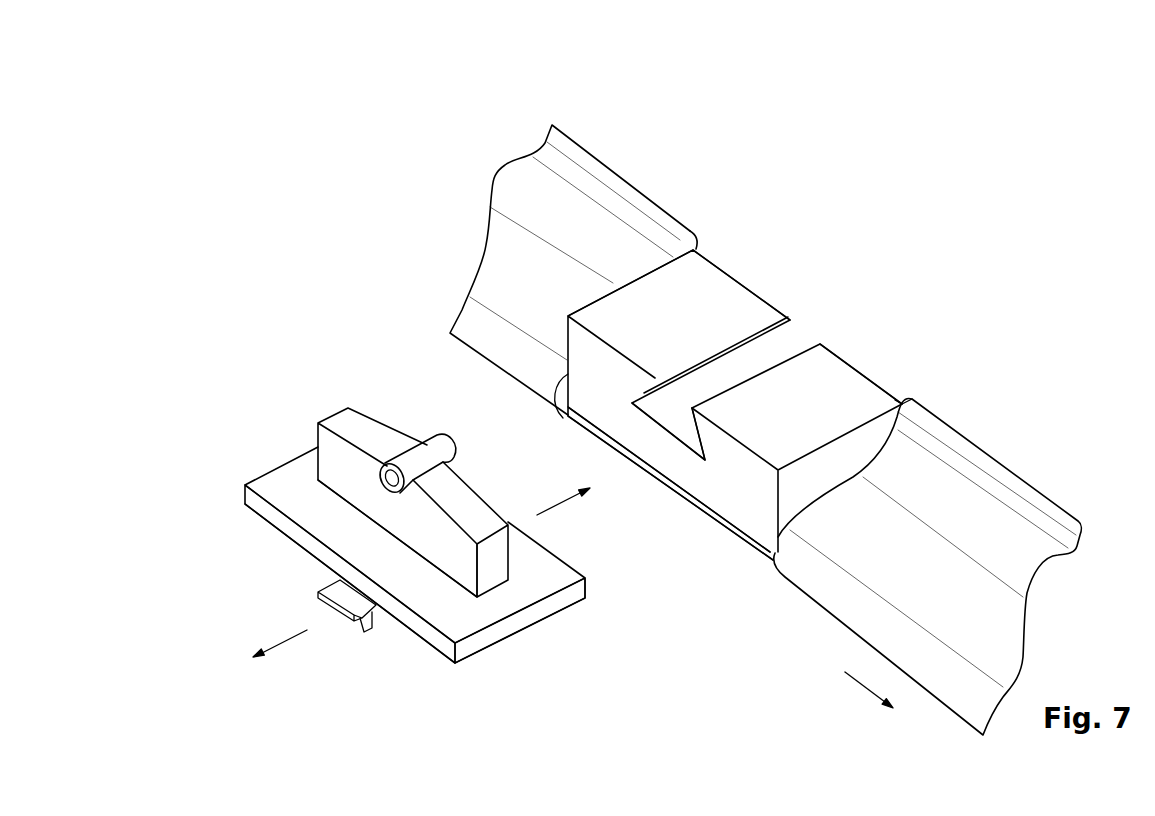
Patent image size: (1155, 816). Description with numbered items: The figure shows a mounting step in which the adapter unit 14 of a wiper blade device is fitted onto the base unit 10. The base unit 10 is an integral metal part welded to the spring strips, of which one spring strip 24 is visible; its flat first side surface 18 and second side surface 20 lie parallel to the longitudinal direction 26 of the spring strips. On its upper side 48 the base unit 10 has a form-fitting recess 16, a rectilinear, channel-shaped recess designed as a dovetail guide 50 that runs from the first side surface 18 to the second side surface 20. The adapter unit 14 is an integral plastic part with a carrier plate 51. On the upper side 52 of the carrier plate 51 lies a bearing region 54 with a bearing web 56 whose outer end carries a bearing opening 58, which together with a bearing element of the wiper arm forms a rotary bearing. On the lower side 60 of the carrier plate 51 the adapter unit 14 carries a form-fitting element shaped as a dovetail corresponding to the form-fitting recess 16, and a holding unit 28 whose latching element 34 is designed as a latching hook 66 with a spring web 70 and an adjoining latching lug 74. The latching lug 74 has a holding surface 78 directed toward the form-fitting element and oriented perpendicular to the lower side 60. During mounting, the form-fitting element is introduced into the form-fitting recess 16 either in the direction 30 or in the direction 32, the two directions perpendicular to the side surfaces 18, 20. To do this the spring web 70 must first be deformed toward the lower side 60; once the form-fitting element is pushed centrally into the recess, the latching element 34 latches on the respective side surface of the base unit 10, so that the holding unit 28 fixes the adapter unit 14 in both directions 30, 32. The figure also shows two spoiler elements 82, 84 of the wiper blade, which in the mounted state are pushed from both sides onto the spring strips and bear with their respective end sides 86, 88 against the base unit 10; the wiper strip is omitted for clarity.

The base unit 10 is at (815, 360).
The adapter unit 14 is at (505, 607).
The form-fitting recess 16 is at (715, 390).
The first side surface 18 is at (736, 473).
The second side surface 20 is at (868, 362).
The spring strip 24 is at (743, 542).
The longitudinal direction 26 is at (867, 687).
The holding unit 28 is at (422, 597).
The direction 30 is at (283, 643).
The direction 32 is at (562, 505).
The latching element 34 is at (386, 659).
The upper side 48 is at (736, 296).
The dovetail guide 50 is at (715, 390).
The carrier plate 51 is at (570, 598).
The upper side 52 is at (372, 556).
The bearing region 54 is at (323, 499).
The bearing web 56 is at (470, 568).
The bearing opening 58 is at (384, 494).
The lower side 60 is at (507, 647).
The latching hook 66 is at (370, 627).
The spring web 70 is at (351, 641).
The latching lug 74 is at (396, 655).
The holding surface 78 is at (377, 659).
The spoiler element 82 is at (605, 235).
The spoiler element 84 is at (965, 497).
The end side 86 is at (700, 244).
The end side 88 is at (891, 395).